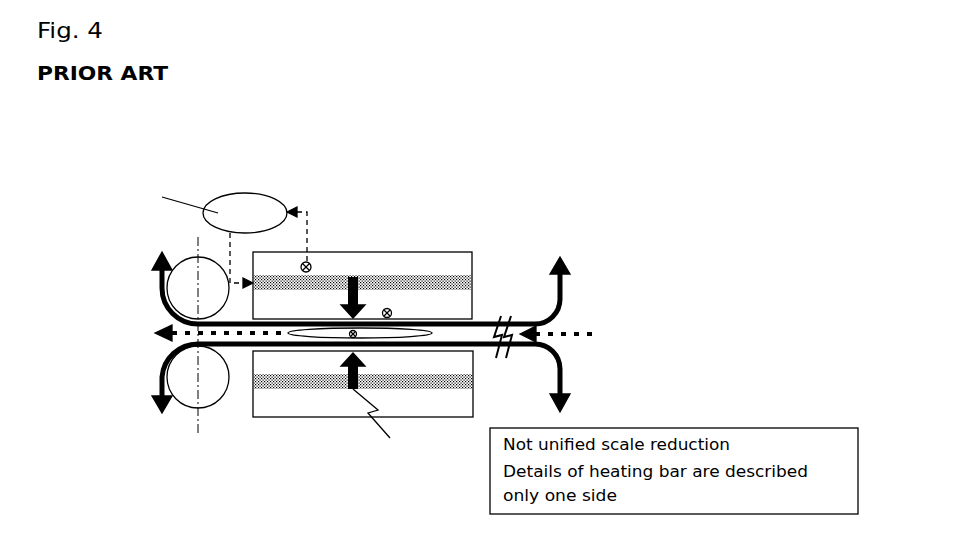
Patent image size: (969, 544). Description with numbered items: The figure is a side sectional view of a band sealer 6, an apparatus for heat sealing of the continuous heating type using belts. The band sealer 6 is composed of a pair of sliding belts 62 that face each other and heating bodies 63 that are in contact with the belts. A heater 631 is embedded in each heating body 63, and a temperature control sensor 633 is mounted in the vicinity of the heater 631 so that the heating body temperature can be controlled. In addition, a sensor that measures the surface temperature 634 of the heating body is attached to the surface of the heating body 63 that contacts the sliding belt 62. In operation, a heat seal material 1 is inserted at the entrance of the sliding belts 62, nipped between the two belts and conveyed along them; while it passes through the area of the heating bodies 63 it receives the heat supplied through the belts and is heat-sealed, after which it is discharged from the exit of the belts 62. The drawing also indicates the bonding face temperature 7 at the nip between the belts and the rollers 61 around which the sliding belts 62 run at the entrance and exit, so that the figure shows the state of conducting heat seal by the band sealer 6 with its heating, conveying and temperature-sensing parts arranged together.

The band sealer 6 is at (431, 303).
The roller 61 is at (193, 272).
The sliding belt 62 is at (485, 322).
The heating body 63 is at (417, 329).
The heater 631 is at (473, 384).
The temperature control sensor 633 is at (312, 283).
The surface temperature of the heating body 634 is at (391, 311).
The bonding face temperature 7 is at (356, 332).
The heat seal material 1 is at (421, 335).